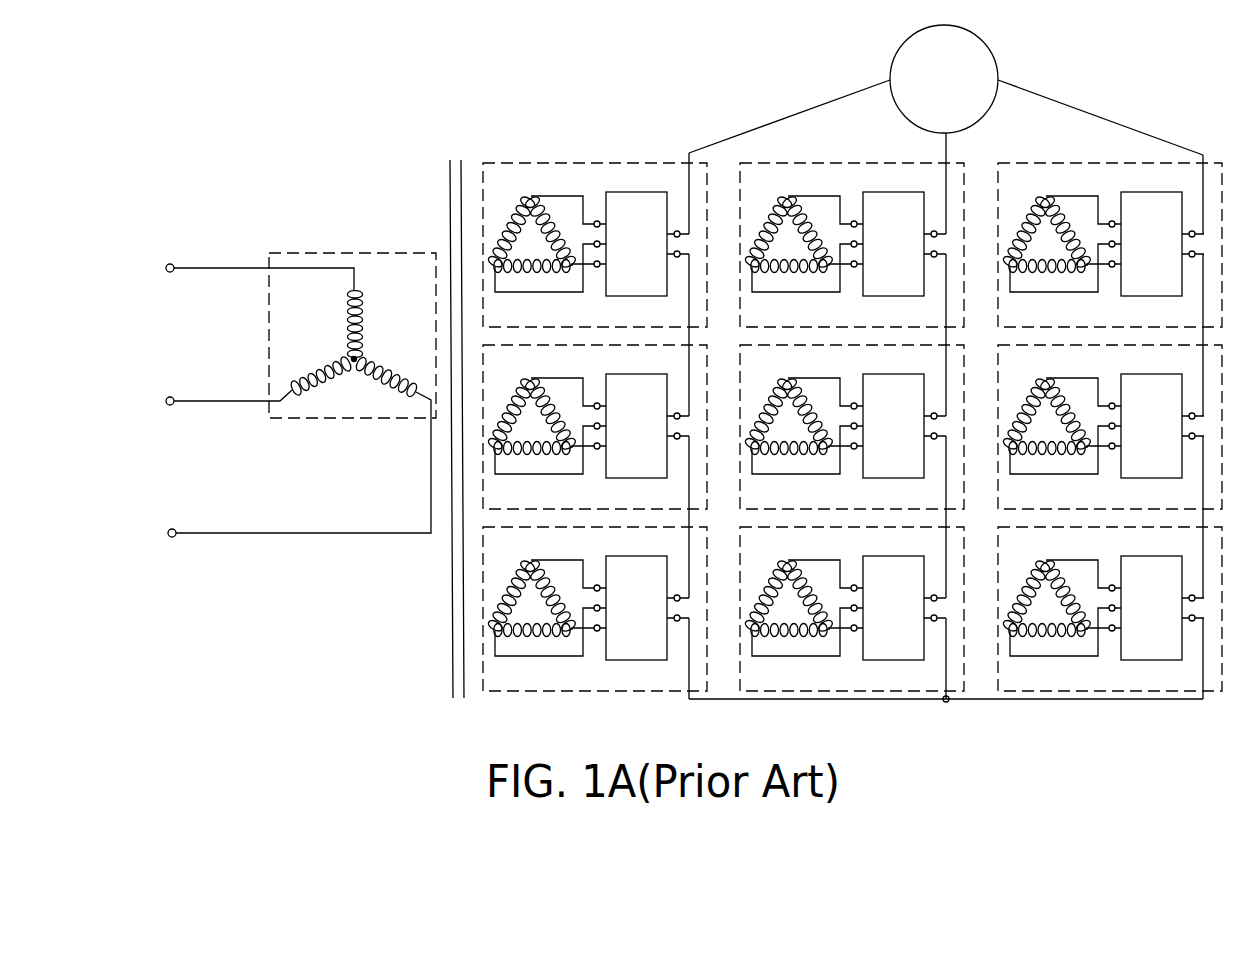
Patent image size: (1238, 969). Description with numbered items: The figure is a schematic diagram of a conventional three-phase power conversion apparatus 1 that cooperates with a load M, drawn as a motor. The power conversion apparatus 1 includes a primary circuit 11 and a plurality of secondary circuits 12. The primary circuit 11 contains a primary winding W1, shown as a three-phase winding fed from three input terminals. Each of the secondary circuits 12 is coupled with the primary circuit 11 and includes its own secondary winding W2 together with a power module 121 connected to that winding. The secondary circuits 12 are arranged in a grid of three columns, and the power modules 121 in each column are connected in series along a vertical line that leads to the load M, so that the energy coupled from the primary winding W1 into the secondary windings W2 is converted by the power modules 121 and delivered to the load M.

The power conversion apparatus 1 is at (253, 130).
The primary circuit 11 is at (390, 252).
The secondary circuit 12 is at (595, 160).
The power module 121 is at (636, 244).
The primary winding W1 is at (352, 375).
The secondary winding W2 is at (525, 190).